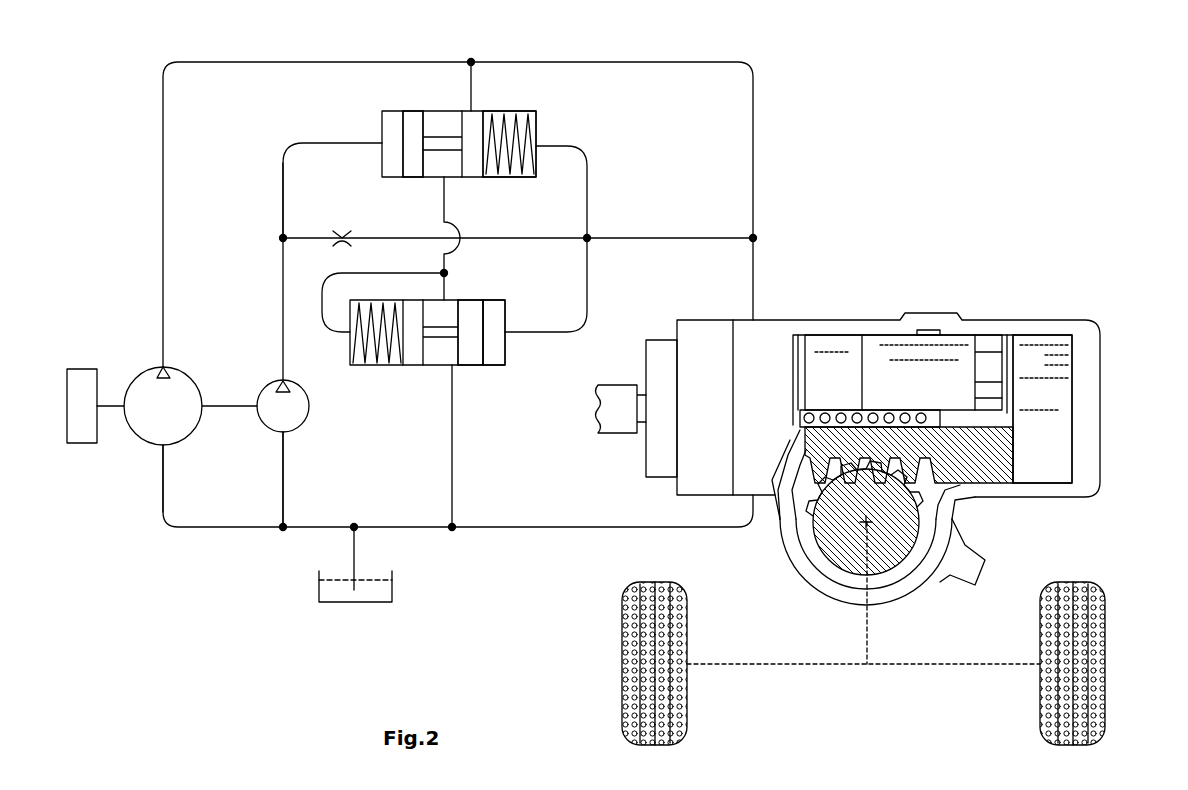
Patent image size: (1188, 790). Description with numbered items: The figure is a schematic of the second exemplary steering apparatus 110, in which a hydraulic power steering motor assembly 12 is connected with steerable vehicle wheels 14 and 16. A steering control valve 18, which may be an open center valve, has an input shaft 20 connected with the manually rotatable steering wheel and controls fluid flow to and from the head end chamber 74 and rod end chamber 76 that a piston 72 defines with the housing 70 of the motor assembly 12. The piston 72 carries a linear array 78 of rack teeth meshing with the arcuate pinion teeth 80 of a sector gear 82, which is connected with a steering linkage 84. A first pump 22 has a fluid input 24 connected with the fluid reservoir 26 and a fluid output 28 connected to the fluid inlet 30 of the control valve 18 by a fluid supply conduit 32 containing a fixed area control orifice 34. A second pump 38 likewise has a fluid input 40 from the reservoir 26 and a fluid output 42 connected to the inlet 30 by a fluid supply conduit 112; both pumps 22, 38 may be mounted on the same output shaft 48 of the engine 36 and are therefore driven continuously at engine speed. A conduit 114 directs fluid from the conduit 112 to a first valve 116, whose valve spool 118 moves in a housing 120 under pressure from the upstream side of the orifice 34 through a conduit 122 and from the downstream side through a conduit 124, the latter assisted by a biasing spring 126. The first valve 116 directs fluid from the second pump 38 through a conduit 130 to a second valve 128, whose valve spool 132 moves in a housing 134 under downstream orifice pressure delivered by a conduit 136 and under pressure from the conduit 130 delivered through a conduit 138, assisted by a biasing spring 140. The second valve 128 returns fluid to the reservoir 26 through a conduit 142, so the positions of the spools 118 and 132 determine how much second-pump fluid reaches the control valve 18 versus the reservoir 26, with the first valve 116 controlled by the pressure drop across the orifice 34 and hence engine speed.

The steering apparatus 110 is at (950, 162).
The fluid supply conduit 112 is at (635, 62).
The conduit 114 is at (473, 95).
The first valve 116 is at (381, 125).
The valve spool 118 is at (410, 125).
The housing 120 is at (540, 130).
The biasing spring 126 is at (518, 178).
The conduit 122 is at (283, 188).
The conduit 124 is at (590, 180).
The conduit 130 is at (440, 208).
The fluid supply conduit 32 is at (673, 236).
The fixed area control orifice 34 is at (340, 234).
The conduit 136 is at (590, 284).
The conduit 138 is at (322, 300).
The housing 134 is at (393, 365).
The biasing spring 140 is at (387, 300).
The valve spool 132 is at (470, 330).
The second valve 128 is at (505, 355).
The conduit 142 is at (455, 490).
The second pump 38 is at (150, 400).
The fluid output 42 is at (168, 375).
The fluid input 40 is at (164, 445).
The output shaft 48 is at (110, 410).
The engine 36 is at (80, 425).
The first pump 22 is at (292, 412).
The fluid output 28 is at (286, 390).
The fluid input 24 is at (288, 432).
The fluid reservoir 26 is at (380, 602).
The input shaft 20 is at (612, 430).
The steering control valve 18 is at (660, 478).
The fluid inlet 30 is at (752, 318).
The hydraulic power steering motor assembly 12 is at (1104, 394).
The piston 72 is at (885, 365).
The housing 70 is at (1025, 332).
The rod end chamber 76 is at (1053, 453).
The linear array of rack teeth 78 is at (965, 495).
The pinion teeth 80 is at (960, 520).
The sector gear 82 is at (845, 545).
The steering linkage 84 is at (870, 625).
The head end chamber 74 is at (772, 488).
The steerable vehicle wheel 14 is at (624, 720).
The steerable vehicle wheel 16 is at (1106, 720).